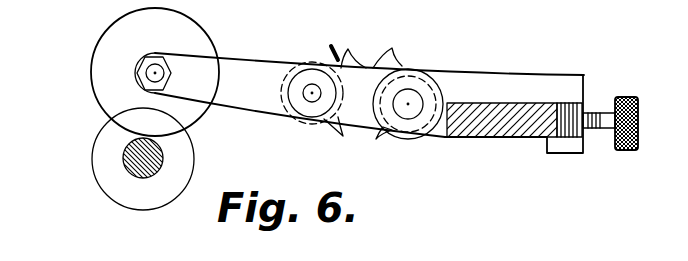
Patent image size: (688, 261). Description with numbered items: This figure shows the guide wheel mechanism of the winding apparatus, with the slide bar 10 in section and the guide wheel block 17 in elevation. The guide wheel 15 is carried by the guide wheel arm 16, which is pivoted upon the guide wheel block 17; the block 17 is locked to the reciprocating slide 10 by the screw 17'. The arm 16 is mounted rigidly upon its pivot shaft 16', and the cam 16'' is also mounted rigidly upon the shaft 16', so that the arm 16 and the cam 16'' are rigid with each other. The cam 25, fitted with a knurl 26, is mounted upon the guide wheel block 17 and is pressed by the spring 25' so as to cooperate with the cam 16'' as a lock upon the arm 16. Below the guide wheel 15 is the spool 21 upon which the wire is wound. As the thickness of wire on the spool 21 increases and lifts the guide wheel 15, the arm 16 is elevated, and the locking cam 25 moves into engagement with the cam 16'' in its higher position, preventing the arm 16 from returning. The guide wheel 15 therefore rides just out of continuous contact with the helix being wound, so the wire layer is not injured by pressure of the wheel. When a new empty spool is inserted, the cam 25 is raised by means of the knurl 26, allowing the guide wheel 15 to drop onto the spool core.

The reciprocating slide 10 is at (530, 125).
The guide wheel 15 is at (112, 53).
The guide wheel arm 16 is at (359, 80).
The pivot shaft 16' is at (408, 121).
The cam 16'' is at (416, 48).
The guide wheel block 17 is at (514, 97).
The screw 17' is at (633, 123).
The spool 21 is at (122, 157).
The cam 25 is at (362, 47).
The spring 25' is at (336, 36).
The knurl 26 is at (315, 65).